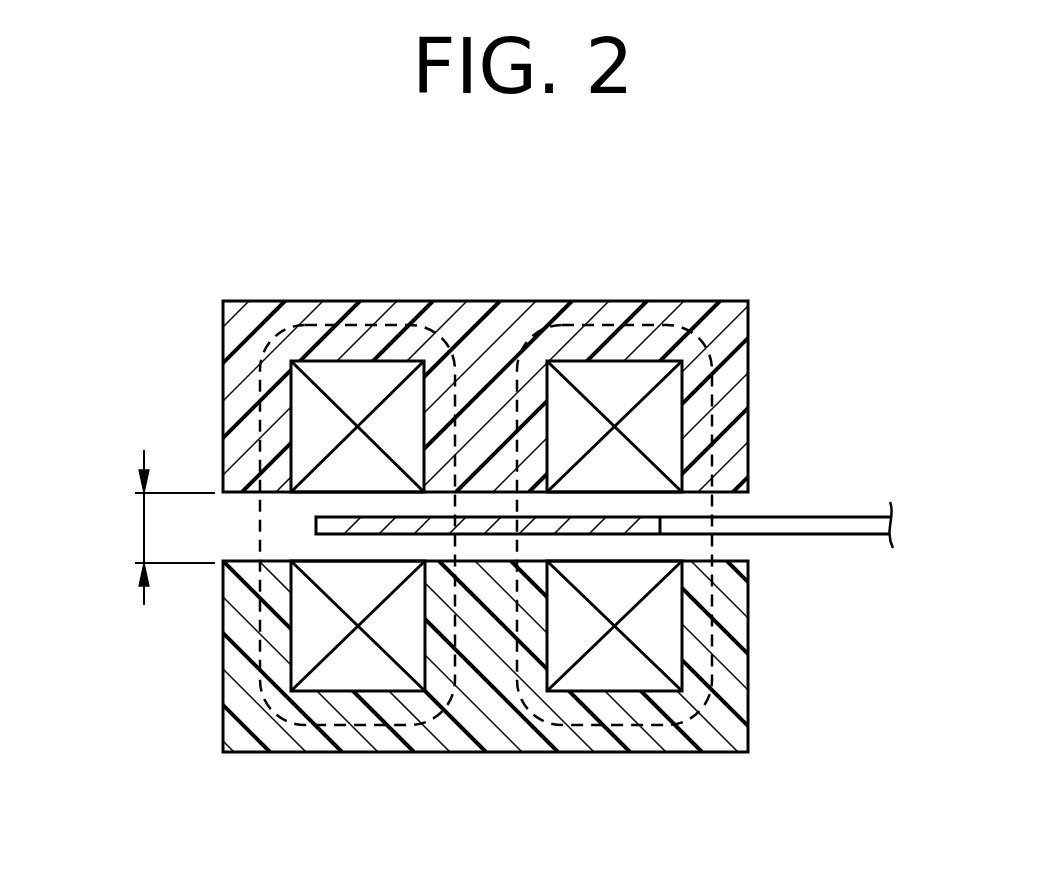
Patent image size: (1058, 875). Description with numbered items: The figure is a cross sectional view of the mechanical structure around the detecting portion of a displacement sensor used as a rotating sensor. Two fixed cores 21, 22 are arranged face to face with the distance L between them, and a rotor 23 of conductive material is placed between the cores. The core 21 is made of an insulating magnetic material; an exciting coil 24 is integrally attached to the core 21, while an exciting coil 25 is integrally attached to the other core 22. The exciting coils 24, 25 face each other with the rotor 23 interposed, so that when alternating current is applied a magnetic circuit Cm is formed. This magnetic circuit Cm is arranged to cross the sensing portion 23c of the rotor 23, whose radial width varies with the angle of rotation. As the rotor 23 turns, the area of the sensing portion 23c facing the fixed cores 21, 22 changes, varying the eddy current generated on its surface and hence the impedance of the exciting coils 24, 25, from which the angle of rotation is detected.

The fixed core 21 is at (617, 312).
The fixed core 22 is at (620, 752).
The rotor 23 is at (830, 522).
The sensing portion 23c is at (590, 517).
The exciting coil 24 is at (327, 428).
The exciting coil 25 is at (327, 627).
The distance L is at (143, 523).
The magnetic circuit Cm is at (362, 752).